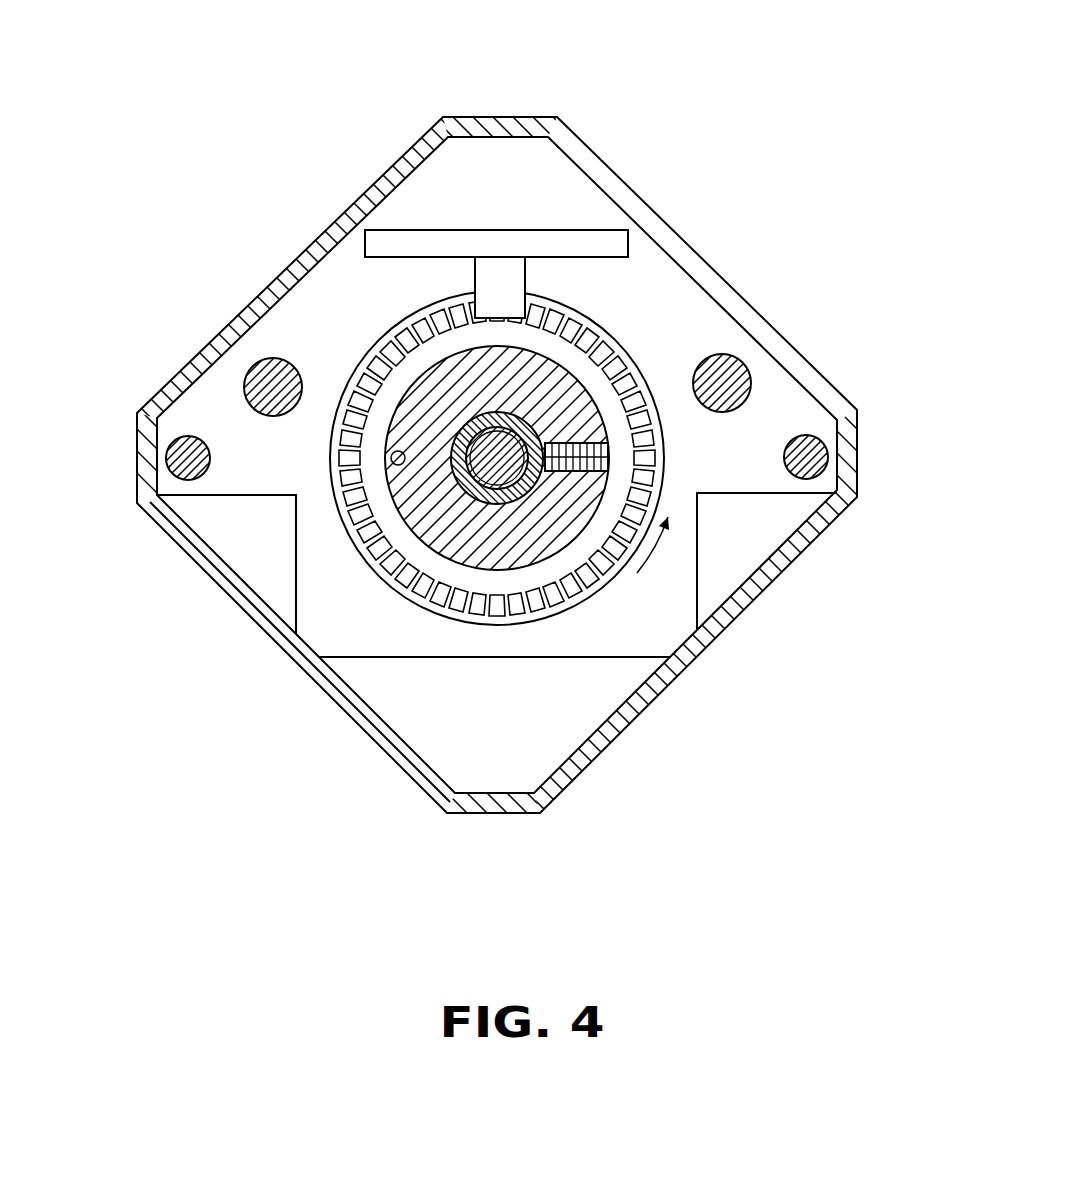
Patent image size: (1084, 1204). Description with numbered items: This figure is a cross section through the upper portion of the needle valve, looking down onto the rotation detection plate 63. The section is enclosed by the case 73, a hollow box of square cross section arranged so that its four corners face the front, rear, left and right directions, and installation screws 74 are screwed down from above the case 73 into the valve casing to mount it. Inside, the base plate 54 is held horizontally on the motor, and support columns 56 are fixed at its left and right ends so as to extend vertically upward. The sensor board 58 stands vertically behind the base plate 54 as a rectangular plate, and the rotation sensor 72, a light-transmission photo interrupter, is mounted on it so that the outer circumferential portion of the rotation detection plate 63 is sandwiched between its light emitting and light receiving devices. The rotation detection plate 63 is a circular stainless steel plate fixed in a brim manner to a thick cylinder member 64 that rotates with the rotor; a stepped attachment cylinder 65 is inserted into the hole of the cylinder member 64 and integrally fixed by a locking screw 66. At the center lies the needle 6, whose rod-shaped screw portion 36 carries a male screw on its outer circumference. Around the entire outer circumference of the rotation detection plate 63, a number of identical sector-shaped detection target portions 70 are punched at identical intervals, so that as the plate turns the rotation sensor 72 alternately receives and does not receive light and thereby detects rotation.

The case 73 is at (578, 120).
The rotation sensor 72 is at (525, 275).
The sensor board 58 is at (610, 237).
The detection target portions 70 is at (612, 330).
The needle 6 is at (510, 440).
The support columns 56 is at (262, 363).
The installation screws 74 is at (173, 457).
The rod-shaped screw portion 36 is at (475, 425).
The rotation detection plate 63 is at (330, 520).
The cylinder member 64 is at (438, 548).
The attachment cylinder 65 is at (505, 505).
The locking screw 66 is at (608, 457).
The base plate 54 is at (690, 580).